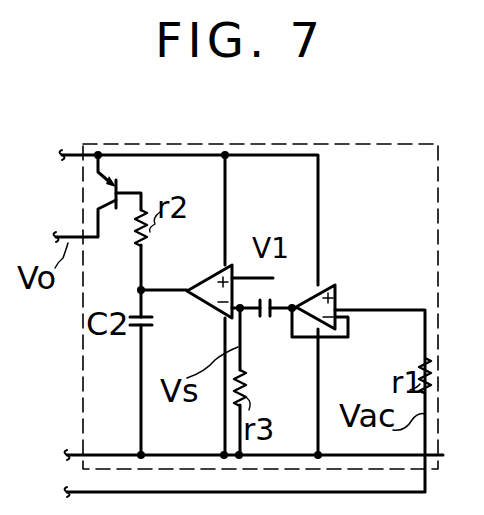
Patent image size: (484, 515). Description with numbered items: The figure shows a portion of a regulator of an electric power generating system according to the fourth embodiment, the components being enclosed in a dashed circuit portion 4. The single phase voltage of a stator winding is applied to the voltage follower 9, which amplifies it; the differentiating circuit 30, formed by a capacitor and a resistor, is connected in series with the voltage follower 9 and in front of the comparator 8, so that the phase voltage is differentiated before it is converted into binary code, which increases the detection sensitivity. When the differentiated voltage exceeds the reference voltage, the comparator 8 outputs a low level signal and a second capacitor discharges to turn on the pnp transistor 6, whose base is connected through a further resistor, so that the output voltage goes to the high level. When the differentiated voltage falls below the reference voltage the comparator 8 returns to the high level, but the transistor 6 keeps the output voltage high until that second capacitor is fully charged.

The regulator portion 4 is at (370, 145).
The pnp transistor 6 is at (110, 192).
The comparator 8 is at (200, 300).
The voltage follower 9 is at (324, 286).
The differentiating circuit 30 is at (277, 350).